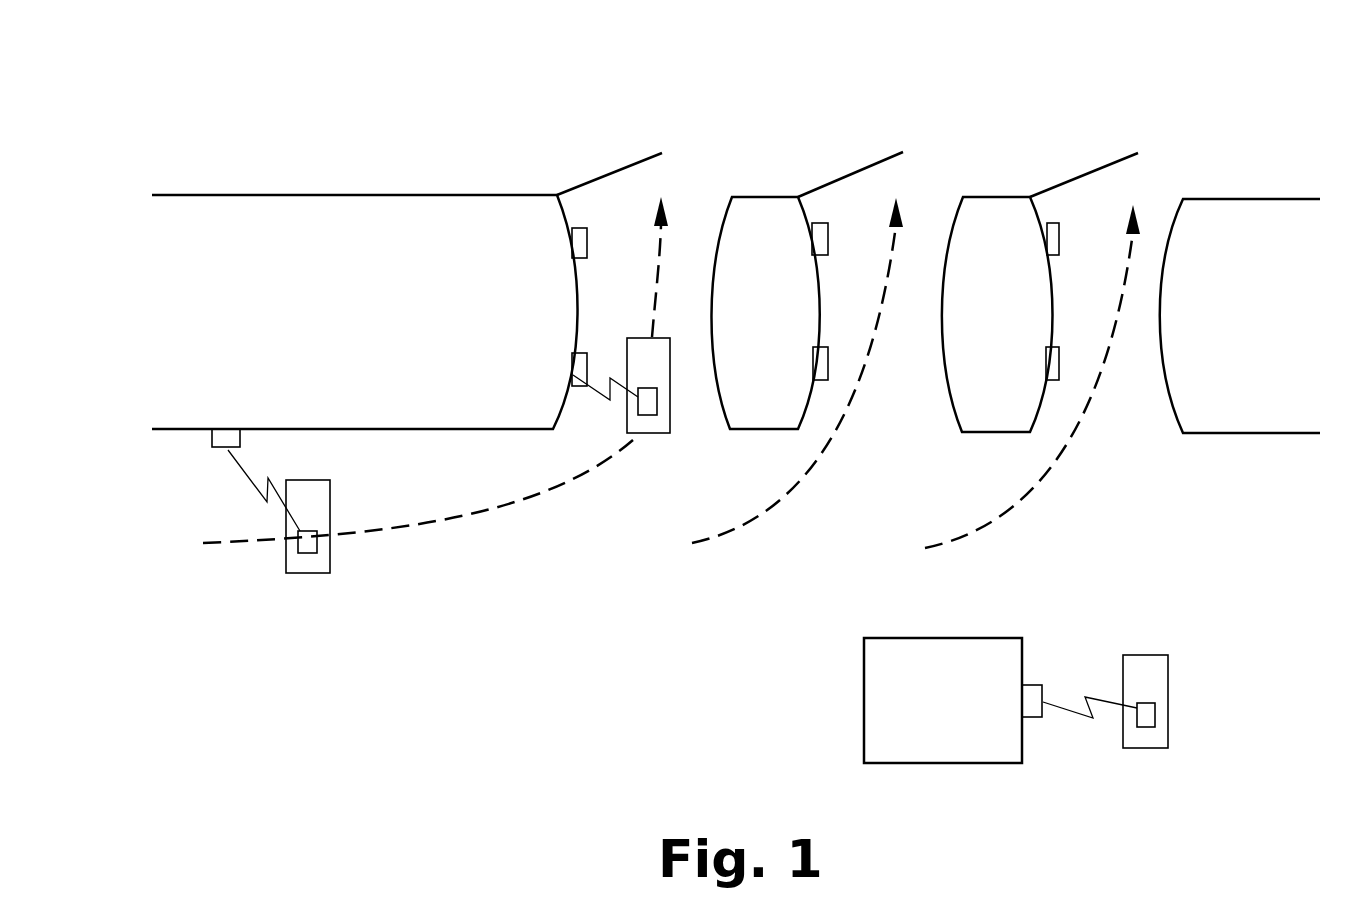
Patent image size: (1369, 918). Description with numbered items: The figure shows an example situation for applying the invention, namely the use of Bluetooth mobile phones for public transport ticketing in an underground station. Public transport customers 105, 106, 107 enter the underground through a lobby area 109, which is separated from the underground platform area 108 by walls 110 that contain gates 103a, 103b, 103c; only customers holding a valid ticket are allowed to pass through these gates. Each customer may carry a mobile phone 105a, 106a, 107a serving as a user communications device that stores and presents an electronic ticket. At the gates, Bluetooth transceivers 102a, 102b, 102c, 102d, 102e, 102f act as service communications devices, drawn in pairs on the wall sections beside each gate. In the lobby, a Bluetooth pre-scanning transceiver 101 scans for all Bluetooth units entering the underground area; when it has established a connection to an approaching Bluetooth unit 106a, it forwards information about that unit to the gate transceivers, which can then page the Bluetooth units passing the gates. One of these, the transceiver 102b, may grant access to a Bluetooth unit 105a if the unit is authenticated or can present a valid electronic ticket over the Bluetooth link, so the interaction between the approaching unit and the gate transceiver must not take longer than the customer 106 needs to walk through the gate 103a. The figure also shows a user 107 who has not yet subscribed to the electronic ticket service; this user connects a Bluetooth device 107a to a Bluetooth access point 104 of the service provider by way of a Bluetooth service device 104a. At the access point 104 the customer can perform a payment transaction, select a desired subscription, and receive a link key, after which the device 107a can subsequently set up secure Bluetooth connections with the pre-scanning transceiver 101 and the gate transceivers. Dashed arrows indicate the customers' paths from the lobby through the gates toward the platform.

The pre-scanning transceiver 101 is at (225, 429).
The Bluetooth transceiver 102a is at (570, 247).
The Bluetooth transceiver 102b is at (572, 375).
The Bluetooth transceiver 102c is at (822, 232).
The Bluetooth transceiver 102d is at (820, 372).
The Bluetooth transceiver 102e is at (1053, 227).
The Bluetooth transceiver 102f is at (1053, 362).
The underground gate 103a is at (617, 172).
The underground gate 103b is at (867, 165).
The underground gate 103c is at (1103, 165).
The Bluetooth access point 104 is at (893, 638).
The Bluetooth service device 104a is at (1032, 685).
The public transport customer 105 is at (627, 423).
The mobile phone 105a is at (648, 405).
The public transport customer 106 is at (325, 513).
The mobile phone 106a is at (305, 542).
The public transport customer 107 is at (1163, 670).
The mobile phone 107a is at (1153, 707).
The underground platform area 108 is at (455, 80).
The lobby area 109 is at (474, 675).
The wall 110 is at (320, 195).